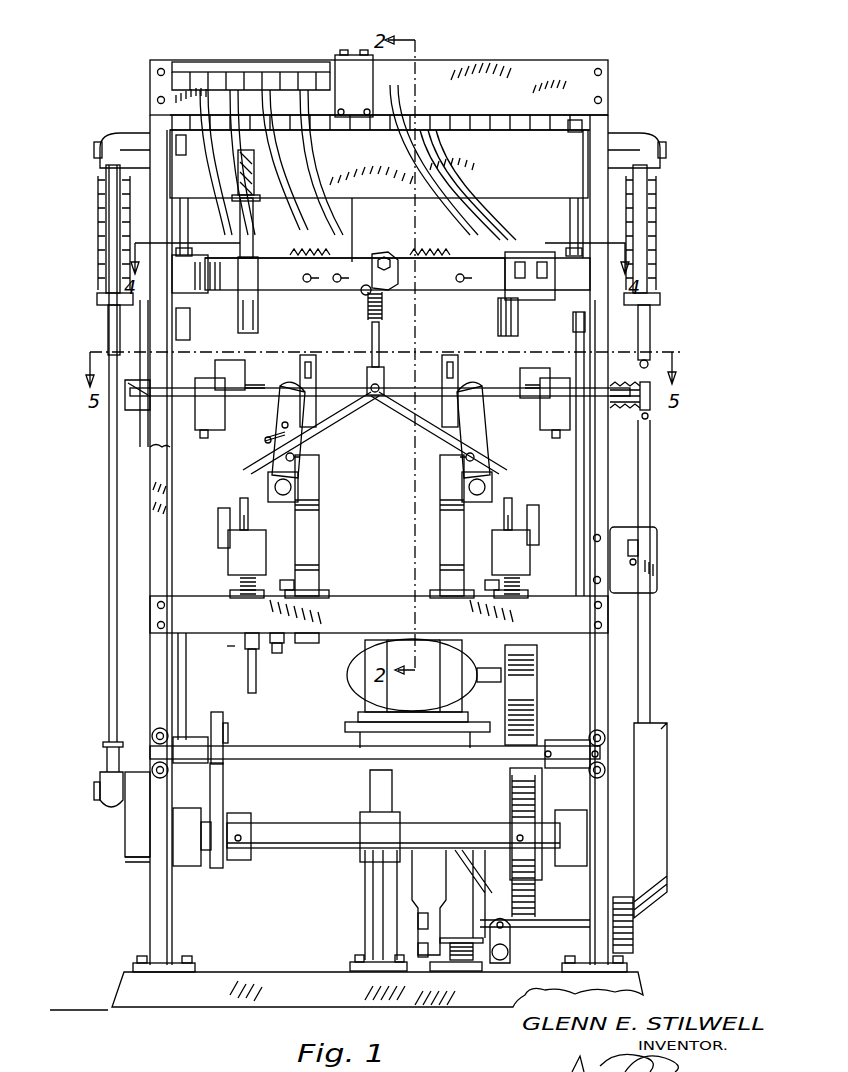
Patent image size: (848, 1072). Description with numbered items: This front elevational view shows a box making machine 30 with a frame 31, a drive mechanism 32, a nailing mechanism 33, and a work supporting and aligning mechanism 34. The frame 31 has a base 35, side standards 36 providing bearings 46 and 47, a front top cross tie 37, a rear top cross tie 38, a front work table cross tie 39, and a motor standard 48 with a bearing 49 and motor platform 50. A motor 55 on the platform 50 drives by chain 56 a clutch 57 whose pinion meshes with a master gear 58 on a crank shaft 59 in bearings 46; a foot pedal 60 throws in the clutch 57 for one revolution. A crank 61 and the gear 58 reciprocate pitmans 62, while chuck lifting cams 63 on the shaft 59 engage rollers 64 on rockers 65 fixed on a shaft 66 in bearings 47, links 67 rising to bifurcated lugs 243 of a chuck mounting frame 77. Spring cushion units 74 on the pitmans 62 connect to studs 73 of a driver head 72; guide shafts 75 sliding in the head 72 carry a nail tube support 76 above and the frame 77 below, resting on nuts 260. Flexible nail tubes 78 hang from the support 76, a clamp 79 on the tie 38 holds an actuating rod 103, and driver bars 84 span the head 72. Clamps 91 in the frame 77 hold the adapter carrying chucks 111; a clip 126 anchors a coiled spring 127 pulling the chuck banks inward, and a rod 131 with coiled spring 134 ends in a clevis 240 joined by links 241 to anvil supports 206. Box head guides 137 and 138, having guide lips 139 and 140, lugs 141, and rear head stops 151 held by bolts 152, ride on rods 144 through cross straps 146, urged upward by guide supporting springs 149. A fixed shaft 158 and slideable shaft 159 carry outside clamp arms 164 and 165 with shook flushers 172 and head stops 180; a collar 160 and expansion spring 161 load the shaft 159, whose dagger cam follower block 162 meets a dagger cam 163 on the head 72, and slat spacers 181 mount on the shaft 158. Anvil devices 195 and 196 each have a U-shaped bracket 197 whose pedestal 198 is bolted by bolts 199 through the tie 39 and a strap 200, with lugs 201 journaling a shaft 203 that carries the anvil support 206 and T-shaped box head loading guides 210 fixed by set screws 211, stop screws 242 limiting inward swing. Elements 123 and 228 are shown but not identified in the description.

The machine 30 is at (701, 45).
The frame 31 is at (132, 922).
The drive mechanism 32 is at (348, 908).
The carriage assembly 33 is at (116, 112).
The side frame 34 is at (92, 507).
The base 35 is at (128, 990).
The upright 36 is at (150, 878).
The top cross beam 37 is at (158, 66).
The tube support bar 38 is at (238, 66).
The cross beam 39 is at (375, 603).
The bearing block 46 is at (186, 838).
The bolt 47 is at (168, 772).
The post 48 is at (370, 928).
The crank block 49 is at (366, 836).
The motor plate 50 is at (346, 728).
The motor 55 is at (352, 686).
The gear train 56 is at (530, 708).
The rack 57 is at (535, 851).
The gear 58 is at (636, 932).
The drive shaft 59 is at (292, 840).
The cam follower 60 is at (460, 960).
The bracket 61 is at (132, 826).
The rod 62 is at (110, 675).
The vertical shaft 63 is at (224, 795).
The plate 64 is at (222, 714).
The bearing 65 is at (192, 738).
The horizontal rail 66 is at (300, 762).
The guide rod 67 is at (178, 680).
The head block 72 is at (379, 164).
The arm 73 is at (136, 140).
The rack bar 74 is at (108, 238).
The rod 75 is at (176, 236).
The tube 76 is at (186, 78).
The bar 77 is at (214, 290).
The tube 78 is at (290, 100).
The box 79 is at (350, 54).
The plunger 84 is at (247, 168).
The block 91 is at (532, 300).
The rod 103 is at (354, 240).
The plunger 111 is at (262, 318).
The nut 123 is at (396, 290).
The spring 126 is at (298, 248).
The spring 127 is at (440, 250).
The rod 131 is at (380, 344).
The spring 134 is at (368, 316).
The solenoid 137 is at (228, 540).
The bracket 138 is at (530, 540).
The solenoid 139 is at (500, 552).
The bracket 140 is at (218, 520).
The bracket 141 is at (266, 535).
The rod 144 is at (252, 680).
The plate 146 is at (236, 632).
The spring 149 is at (256, 572).
The pin 151 is at (240, 510).
The pin 152 is at (244, 498).
The shaft 158 is at (360, 385).
The shaft 159 is at (336, 385).
The stop 160 is at (650, 413).
The spring 161 is at (630, 410).
The block 162 is at (128, 408).
The rod 163 is at (140, 325).
The bracket 164 is at (205, 432).
The bracket 165 is at (552, 432).
The block 172 is at (228, 362).
The pin 180 is at (248, 384).
The slotted link 181 is at (296, 368).
The post 195 is at (319, 500).
The post 196 is at (440, 490).
The post body 197 is at (319, 520).
The foot 198 is at (316, 587).
The nut 199 is at (280, 648).
The block 200 is at (290, 640).
The block 201 is at (282, 500).
The pivot 203 is at (484, 482).
The arm 206 is at (278, 416).
The link 210 is at (270, 426).
The pin 211 is at (268, 448).
The link 228 is at (480, 430).
The block 240 is at (395, 368).
The link 241 is at (345, 412).
The pin 242 is at (300, 457).
The tab 243 is at (190, 330).
The clamp 260 is at (176, 152).